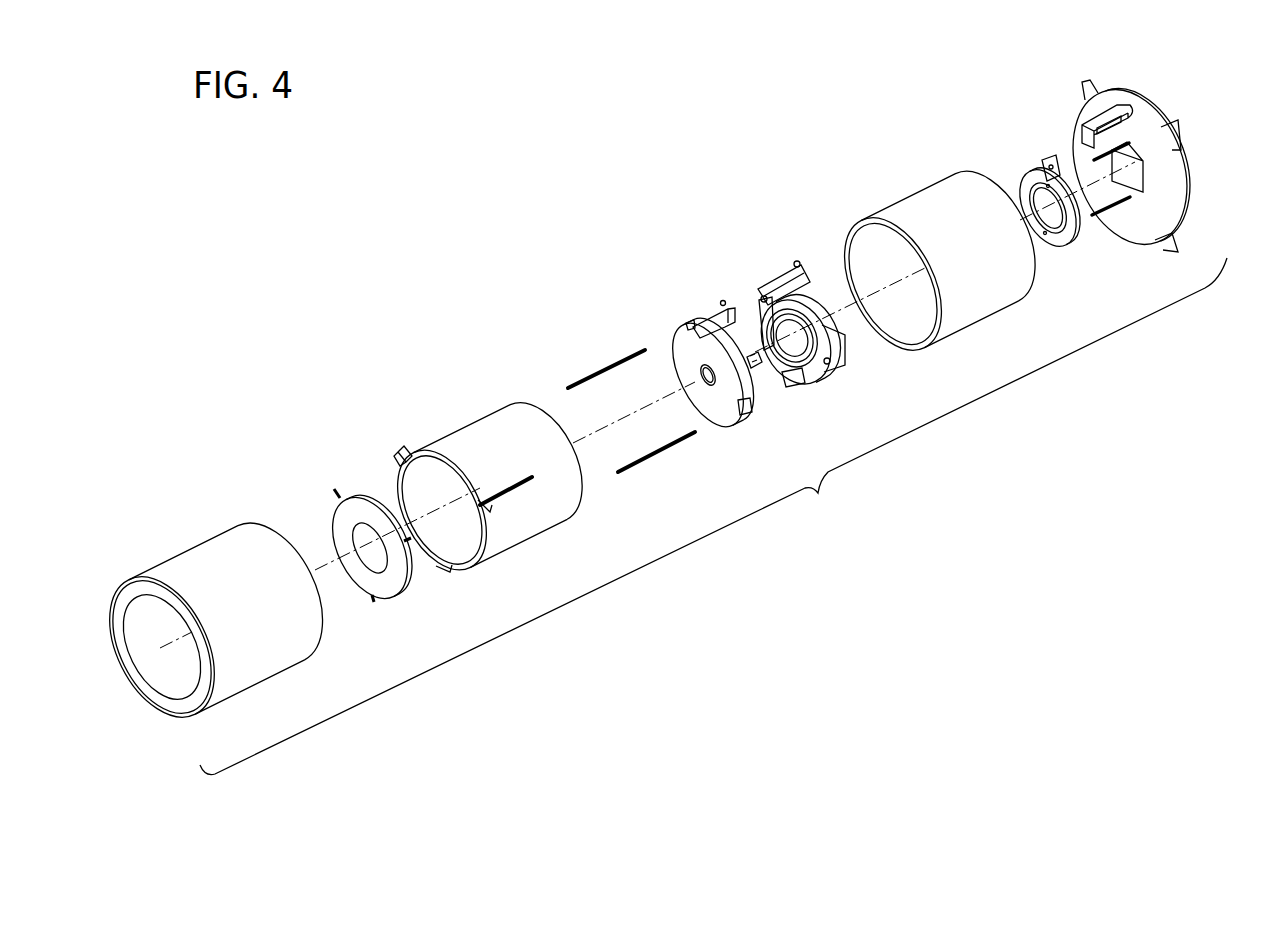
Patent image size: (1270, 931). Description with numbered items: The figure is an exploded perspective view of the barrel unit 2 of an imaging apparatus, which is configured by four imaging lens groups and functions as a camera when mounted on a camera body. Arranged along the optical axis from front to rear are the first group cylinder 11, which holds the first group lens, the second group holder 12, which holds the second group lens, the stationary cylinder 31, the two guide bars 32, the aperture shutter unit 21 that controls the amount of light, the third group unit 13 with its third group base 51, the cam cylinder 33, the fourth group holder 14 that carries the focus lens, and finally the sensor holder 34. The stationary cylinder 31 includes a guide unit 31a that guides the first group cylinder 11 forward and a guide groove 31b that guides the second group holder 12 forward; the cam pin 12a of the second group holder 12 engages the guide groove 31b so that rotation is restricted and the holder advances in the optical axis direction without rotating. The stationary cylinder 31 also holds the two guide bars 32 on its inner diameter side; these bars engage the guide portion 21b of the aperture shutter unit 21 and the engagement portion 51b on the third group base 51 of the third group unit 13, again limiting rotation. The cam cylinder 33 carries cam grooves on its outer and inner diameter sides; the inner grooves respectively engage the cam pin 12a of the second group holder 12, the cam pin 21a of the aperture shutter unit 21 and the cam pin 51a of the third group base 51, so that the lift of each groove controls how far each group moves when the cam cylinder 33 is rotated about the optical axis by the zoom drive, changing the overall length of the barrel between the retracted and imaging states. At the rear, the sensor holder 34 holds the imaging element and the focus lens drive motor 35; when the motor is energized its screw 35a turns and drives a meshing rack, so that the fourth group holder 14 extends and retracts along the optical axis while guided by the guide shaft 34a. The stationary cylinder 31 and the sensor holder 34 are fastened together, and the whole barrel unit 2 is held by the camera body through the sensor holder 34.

The barrel unit 2 is at (713, 516).
The first group cylinder 11 is at (202, 548).
The second group holder 12 is at (384, 578).
The cam pin 12a is at (336, 490).
The third group unit 13 is at (793, 363).
The fourth group holder 14 is at (1060, 242).
The aperture shutter unit 21 is at (723, 422).
The cam pin 21a is at (722, 302).
The guide portion 21b is at (688, 326).
The stationary cylinder 31 is at (533, 497).
The guide unit 31a is at (405, 450).
The guide groove 31b is at (503, 486).
The guide bars 32 is at (593, 378).
The cam cylinder 33 is at (992, 297).
The sensor holder 34 is at (1158, 172).
The guide shaft 34a is at (1110, 175).
The focus lens drive motor 35 is at (1125, 98).
The screw 35a is at (1095, 125).
The third group base 51 is at (783, 292).
The cam pin 51a is at (798, 261).
The engagement portion 51b is at (762, 295).